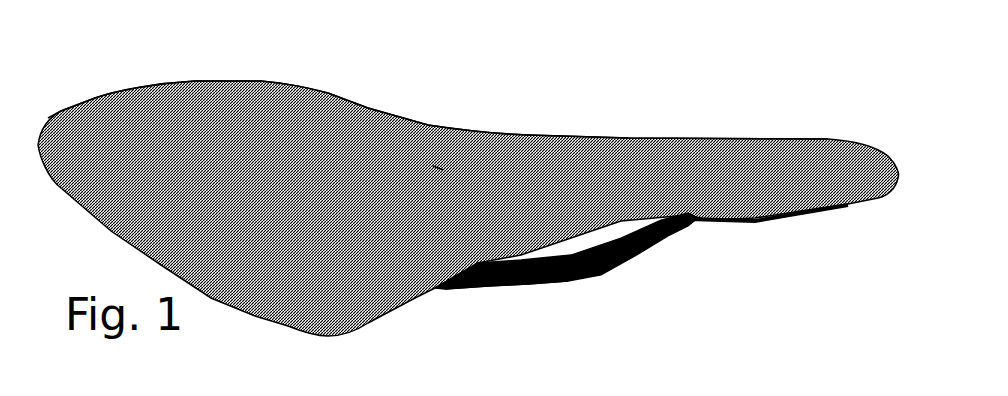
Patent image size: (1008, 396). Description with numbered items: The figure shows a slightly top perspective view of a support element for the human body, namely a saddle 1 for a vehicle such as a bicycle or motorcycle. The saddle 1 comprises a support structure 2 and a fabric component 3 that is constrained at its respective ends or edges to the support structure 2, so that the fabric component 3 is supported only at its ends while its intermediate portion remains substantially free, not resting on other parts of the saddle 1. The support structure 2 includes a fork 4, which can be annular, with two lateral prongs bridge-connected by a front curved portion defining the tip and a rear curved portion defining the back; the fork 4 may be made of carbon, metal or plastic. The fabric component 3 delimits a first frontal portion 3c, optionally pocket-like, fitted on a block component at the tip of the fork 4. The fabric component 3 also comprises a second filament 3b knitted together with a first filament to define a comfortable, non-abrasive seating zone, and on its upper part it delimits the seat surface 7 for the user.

The saddle 1 is at (468, 196).
The support structure 2 is at (566, 289).
The fabric component 3 is at (468, 181).
The second filament 3b is at (310, 105).
The first frontal portion 3c is at (747, 213).
The fork 4 is at (503, 278).
The seat surface 7 is at (430, 160).